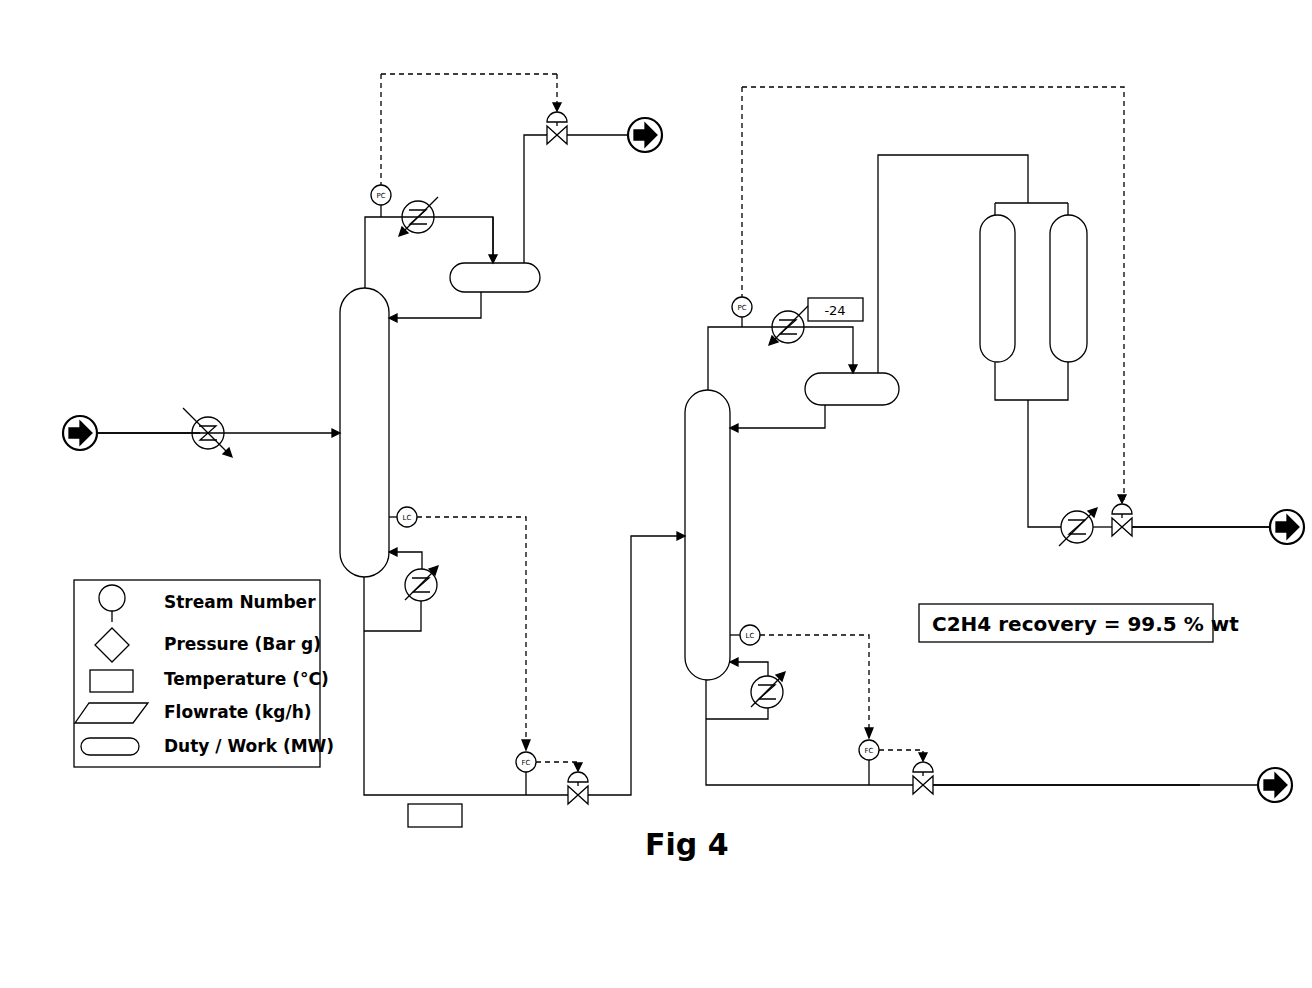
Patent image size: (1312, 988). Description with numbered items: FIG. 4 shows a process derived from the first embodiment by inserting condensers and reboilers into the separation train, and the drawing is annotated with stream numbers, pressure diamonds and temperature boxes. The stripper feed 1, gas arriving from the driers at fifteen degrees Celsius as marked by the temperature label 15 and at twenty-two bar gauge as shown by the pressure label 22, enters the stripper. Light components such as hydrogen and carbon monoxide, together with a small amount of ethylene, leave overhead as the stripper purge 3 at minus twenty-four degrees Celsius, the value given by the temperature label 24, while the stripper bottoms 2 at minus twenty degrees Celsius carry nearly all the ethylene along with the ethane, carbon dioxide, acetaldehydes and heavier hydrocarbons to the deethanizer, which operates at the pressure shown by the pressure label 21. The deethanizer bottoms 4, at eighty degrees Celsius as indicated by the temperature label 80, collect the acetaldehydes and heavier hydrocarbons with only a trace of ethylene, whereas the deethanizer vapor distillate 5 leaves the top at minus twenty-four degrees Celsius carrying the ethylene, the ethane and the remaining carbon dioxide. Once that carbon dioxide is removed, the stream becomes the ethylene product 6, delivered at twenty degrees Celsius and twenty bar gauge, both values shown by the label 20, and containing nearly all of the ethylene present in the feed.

The stripper feed 1 is at (133, 433).
The stripper bottoms 2 is at (382, 795).
The stripper purge 3 is at (607, 135).
The deethanizer bottoms 4 is at (1222, 785).
The deethanizer vapor distillate 5 is at (939, 155).
The ethylene product 6 is at (1248, 527).
The stripper feed temperature 15 is at (148, 454).
The ethylene product temperature and pressure 20 is at (1204, 494).
The deethanizer pressure 21 is at (708, 398).
The stripper pressure 22 is at (365, 288).
The condenser temperature 24 is at (472, 222).
The deethanizer bottoms temperature 80 is at (1066, 771).